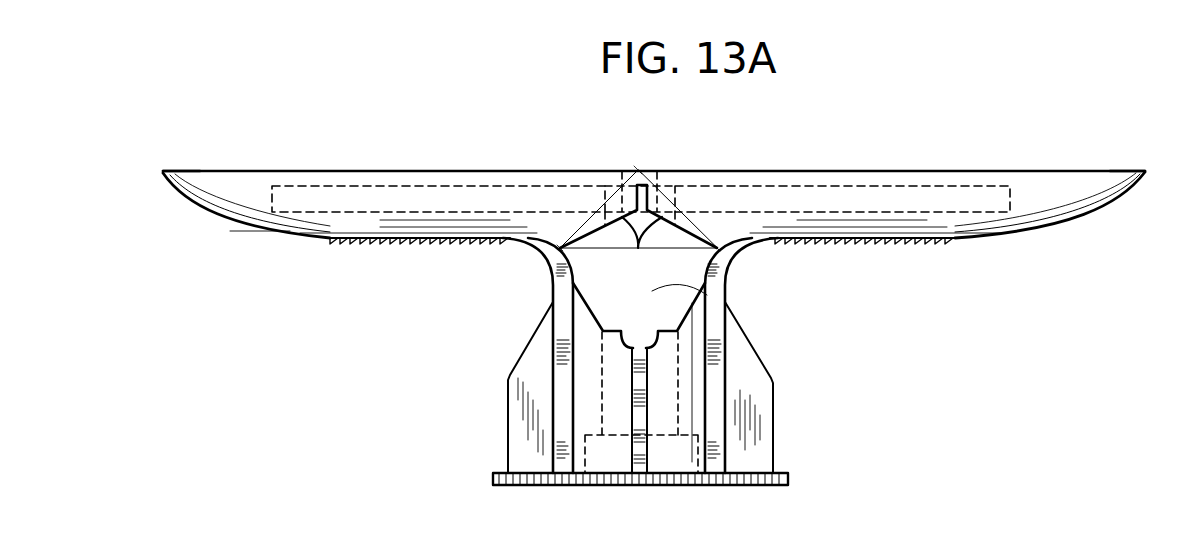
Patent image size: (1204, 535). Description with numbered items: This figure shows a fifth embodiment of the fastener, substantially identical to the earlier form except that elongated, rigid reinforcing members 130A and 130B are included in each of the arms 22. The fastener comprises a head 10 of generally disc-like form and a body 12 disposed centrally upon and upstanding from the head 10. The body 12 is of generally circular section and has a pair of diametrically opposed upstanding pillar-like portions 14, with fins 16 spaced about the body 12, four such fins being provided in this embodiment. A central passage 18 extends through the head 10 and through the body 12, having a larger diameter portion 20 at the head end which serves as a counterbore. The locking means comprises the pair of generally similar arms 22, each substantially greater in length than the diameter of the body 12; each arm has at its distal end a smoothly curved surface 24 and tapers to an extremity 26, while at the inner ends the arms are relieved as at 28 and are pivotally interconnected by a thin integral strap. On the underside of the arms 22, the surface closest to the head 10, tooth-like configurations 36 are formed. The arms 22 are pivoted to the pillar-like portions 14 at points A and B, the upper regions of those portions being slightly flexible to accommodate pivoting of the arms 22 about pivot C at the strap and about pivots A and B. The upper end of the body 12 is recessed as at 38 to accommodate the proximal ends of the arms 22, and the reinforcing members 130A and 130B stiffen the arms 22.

The head 10 is at (494, 473).
The body 12 is at (734, 360).
The pillar-like portions 14 is at (566, 301).
The fins 16 is at (528, 412).
The central passage 18 is at (677, 354).
The larger diameter portion 20 is at (587, 466).
The arms 22 is at (333, 171).
The smoothly curved surface 24 is at (202, 209).
The extremity 26 is at (163, 171).
The relief 28 is at (638, 250).
The tooth-like configurations 36 is at (378, 246).
The recess 38 is at (727, 299).
The reinforcing member 130A is at (921, 190).
The reinforcing member 130B is at (466, 196).
The pivot point A is at (711, 250).
The pivot point B is at (565, 250).
The pivot C is at (638, 170).